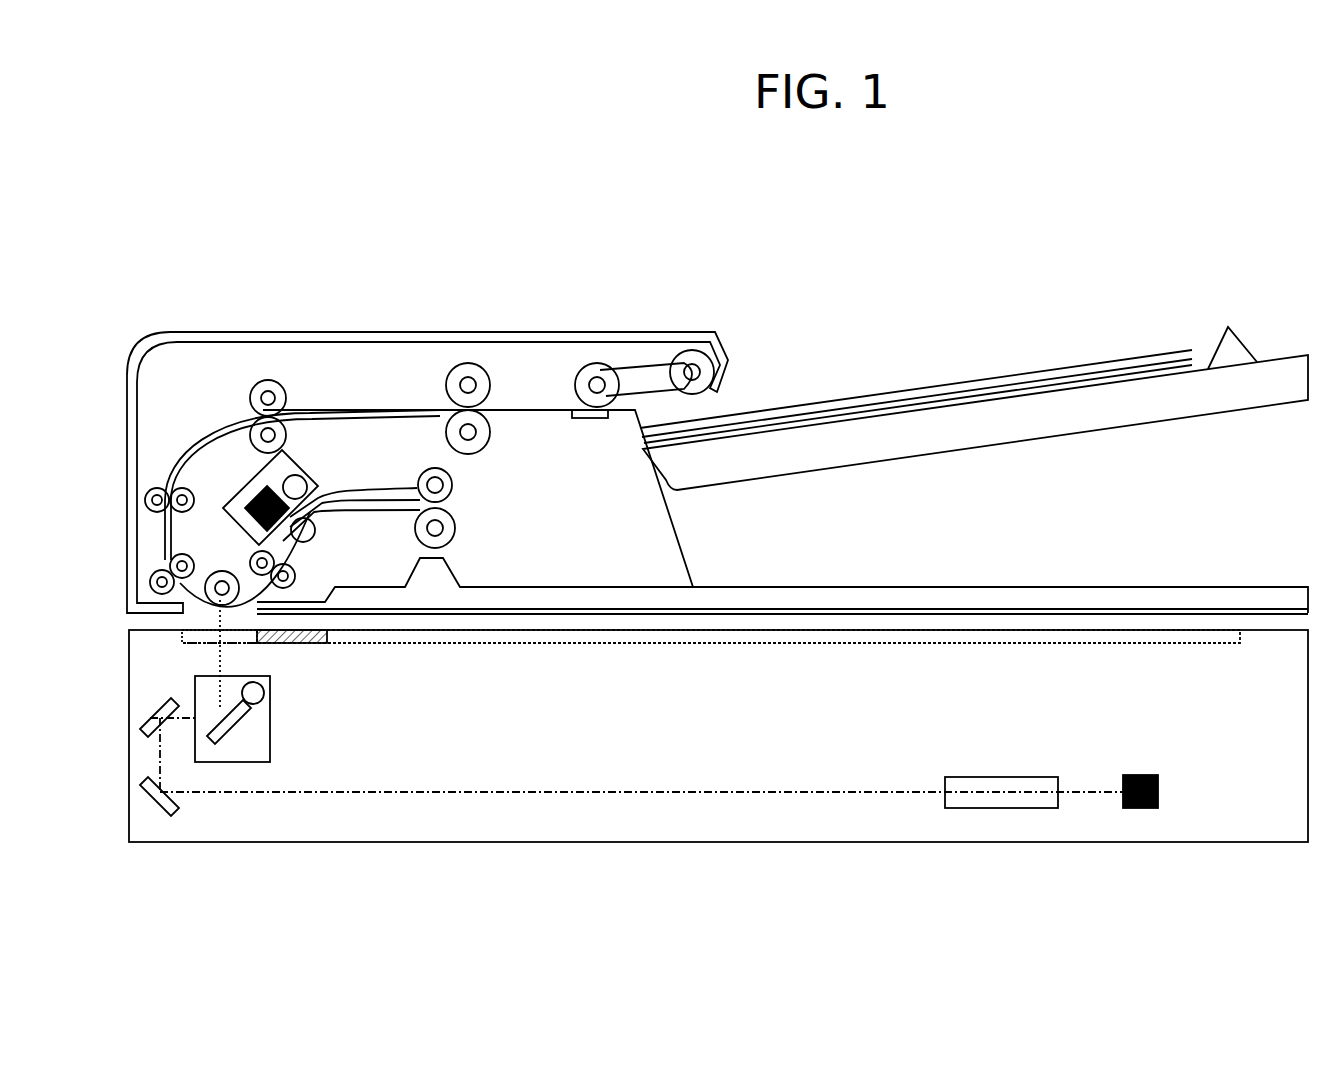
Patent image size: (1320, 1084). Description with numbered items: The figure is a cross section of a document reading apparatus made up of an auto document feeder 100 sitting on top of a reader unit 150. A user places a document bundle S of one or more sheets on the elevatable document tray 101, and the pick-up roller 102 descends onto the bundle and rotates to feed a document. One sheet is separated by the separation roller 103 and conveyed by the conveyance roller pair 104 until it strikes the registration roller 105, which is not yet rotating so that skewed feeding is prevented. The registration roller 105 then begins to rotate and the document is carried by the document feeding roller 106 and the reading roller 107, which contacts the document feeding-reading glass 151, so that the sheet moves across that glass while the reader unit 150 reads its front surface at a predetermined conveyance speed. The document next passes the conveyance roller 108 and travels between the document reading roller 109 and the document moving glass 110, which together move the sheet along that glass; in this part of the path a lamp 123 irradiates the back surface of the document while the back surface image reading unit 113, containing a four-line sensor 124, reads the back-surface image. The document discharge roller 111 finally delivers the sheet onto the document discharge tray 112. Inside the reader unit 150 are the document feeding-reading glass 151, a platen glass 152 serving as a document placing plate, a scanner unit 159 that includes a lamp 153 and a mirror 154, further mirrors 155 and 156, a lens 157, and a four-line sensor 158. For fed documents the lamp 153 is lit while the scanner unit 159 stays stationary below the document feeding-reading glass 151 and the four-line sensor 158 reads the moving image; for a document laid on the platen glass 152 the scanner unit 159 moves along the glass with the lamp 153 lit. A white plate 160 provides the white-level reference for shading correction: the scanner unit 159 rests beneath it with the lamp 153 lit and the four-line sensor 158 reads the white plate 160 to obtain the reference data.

The auto document feeder 100 is at (512, 328).
The elevatable document tray 101 is at (822, 430).
The pick-up roller 102 is at (690, 352).
The separation roller 103 is at (578, 385).
The conveyance roller pair 104 is at (448, 384).
The registration roller 105 is at (145, 500).
The document feeding roller 106 is at (150, 583).
The reading roller 107 is at (222, 589).
The conveyance roller 108 is at (296, 578).
The document reading roller 109 is at (315, 530).
The document moving glass 110 is at (417, 488).
The document discharge roller 111 is at (453, 484).
The document discharge tray 112 is at (584, 586).
The back surface image reading unit 113 is at (307, 484).
The lamp 123 is at (296, 476).
The four-line sensor 124 is at (260, 500).
The reader unit 150 is at (480, 850).
The document feeding-reading glass 151 is at (207, 643).
The platen glass 152 is at (523, 637).
The lamp 153 is at (265, 690).
The mirror 154 is at (222, 742).
The mirror 155 is at (152, 720).
The mirror 156 is at (178, 804).
The lens 157 is at (1000, 777).
The four-line sensor 158 is at (1143, 775).
The scanner unit 159 is at (270, 748).
The white plate 160 is at (292, 644).
The document bundle S is at (950, 385).